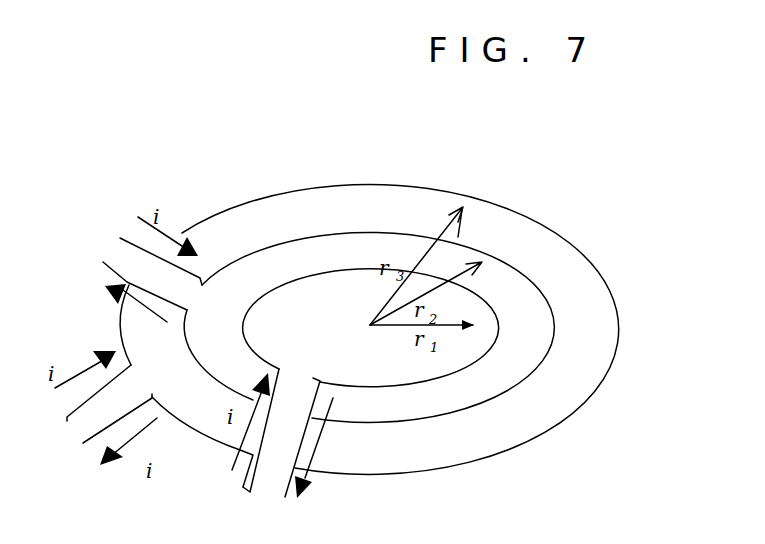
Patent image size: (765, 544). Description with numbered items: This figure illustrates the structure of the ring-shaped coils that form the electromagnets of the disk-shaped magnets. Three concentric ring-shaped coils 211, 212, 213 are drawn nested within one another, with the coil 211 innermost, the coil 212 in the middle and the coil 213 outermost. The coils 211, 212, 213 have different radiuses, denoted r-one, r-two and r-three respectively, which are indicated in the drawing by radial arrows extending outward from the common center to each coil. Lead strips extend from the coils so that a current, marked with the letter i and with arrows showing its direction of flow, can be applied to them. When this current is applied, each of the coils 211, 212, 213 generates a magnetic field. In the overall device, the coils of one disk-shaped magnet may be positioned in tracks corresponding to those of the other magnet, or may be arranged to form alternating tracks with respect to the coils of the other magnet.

The coil 211 is at (430, 380).
The coil 212 is at (557, 322).
The coil 213 is at (511, 204).